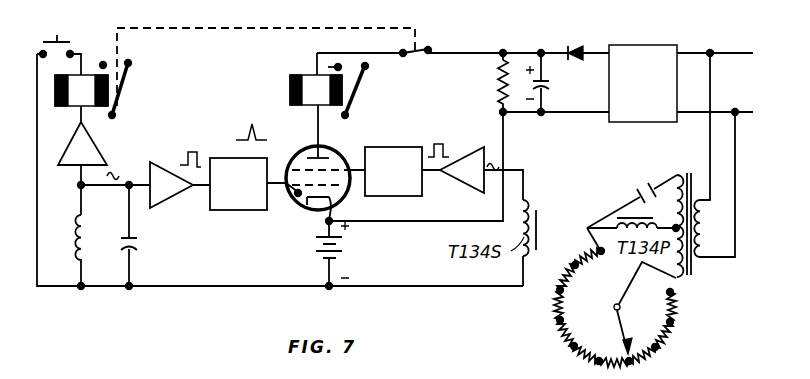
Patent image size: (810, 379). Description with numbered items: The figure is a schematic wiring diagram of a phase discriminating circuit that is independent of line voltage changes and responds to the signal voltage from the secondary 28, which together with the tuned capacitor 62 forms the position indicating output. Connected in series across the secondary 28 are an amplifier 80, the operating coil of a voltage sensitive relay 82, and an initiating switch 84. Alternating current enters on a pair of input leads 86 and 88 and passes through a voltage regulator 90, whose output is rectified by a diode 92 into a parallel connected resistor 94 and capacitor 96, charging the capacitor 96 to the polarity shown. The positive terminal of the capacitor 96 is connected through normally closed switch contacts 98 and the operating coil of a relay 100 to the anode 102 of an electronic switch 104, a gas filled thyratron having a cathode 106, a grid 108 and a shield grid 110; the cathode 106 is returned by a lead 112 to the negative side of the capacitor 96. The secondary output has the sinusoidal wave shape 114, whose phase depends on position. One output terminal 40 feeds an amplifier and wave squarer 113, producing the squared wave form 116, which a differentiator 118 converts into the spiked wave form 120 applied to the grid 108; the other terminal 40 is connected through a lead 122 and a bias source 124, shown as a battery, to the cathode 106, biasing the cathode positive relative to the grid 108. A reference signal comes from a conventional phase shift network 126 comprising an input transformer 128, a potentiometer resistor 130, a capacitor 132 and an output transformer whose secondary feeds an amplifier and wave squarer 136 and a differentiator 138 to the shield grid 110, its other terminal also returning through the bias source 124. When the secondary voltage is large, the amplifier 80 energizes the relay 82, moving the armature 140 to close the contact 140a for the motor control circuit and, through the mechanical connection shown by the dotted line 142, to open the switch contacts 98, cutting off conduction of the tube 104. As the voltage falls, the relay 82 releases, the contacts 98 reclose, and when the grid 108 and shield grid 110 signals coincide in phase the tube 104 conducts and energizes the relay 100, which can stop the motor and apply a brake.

The initiating switch 84 is at (47, 42).
The voltage sensitive relay 82 is at (75, 108).
The amplifier 80 is at (72, 168).
The contact 140a is at (103, 61).
The armature 140 is at (121, 90).
The dotted line 142 is at (236, 30).
The relay 100 is at (295, 72).
The normally closed switch contacts 98 is at (426, 47).
The resistor 94 is at (497, 86).
The capacitor 96 is at (552, 86).
The diode 92 is at (575, 48).
The voltage regulator 90 is at (657, 45).
The input lead 86 is at (728, 53).
The input lead 88 is at (745, 112).
The lead 112 is at (504, 142).
The wave shape 114 is at (113, 169).
The output terminals 40 is at (79, 188).
The secondary 28 is at (75, 238).
The capacitor 62 is at (121, 243).
The amplifier and wave squarer 113 is at (153, 206).
The wave form 116 is at (192, 156).
The differentiator 118 is at (243, 212).
The wave form 120 is at (249, 134).
The anode 102 is at (309, 156).
The shield grid 110 is at (300, 169).
The grid 108 is at (292, 202).
The cathode 106 is at (318, 208).
The electronic switch 104 is at (343, 198).
The bias source 124 is at (348, 246).
The lead 122 is at (230, 288).
The differentiator 138 is at (400, 147).
The amplifier and wave squarer 136 is at (471, 191).
The phase shift network 126 is at (676, 175).
The capacitor 132 is at (648, 180).
The input transformer 128 is at (696, 278).
The potentiometer resistor 130 is at (680, 330).